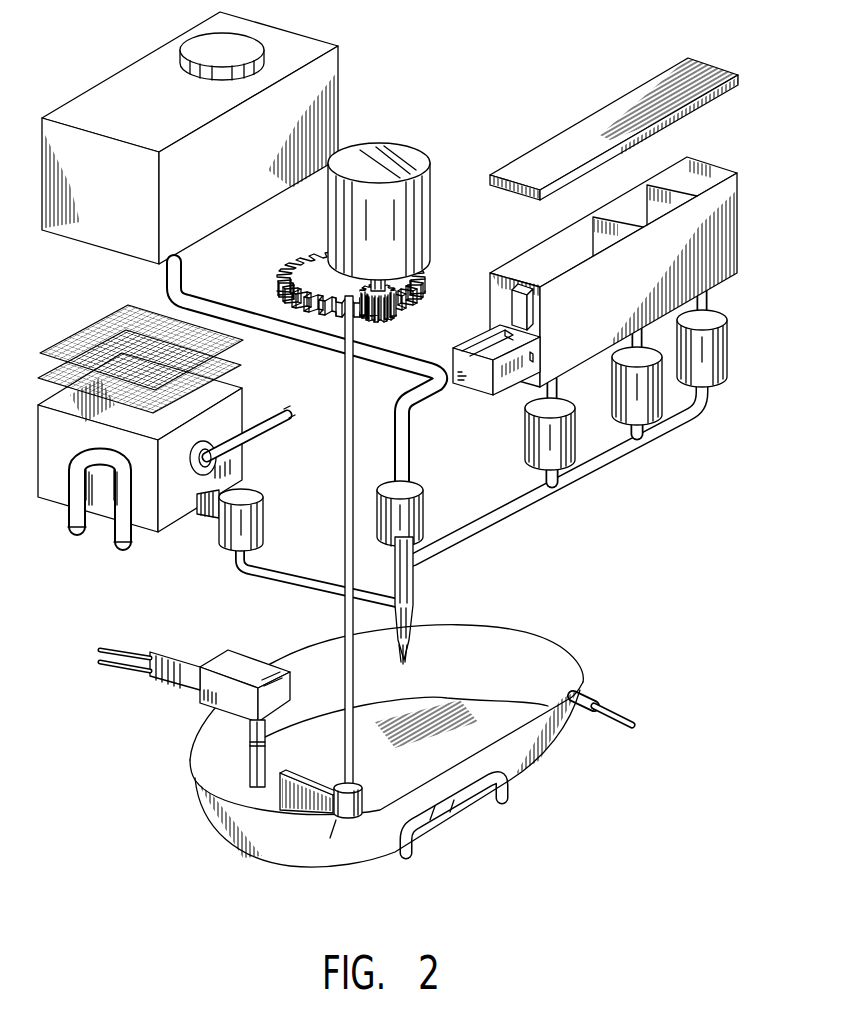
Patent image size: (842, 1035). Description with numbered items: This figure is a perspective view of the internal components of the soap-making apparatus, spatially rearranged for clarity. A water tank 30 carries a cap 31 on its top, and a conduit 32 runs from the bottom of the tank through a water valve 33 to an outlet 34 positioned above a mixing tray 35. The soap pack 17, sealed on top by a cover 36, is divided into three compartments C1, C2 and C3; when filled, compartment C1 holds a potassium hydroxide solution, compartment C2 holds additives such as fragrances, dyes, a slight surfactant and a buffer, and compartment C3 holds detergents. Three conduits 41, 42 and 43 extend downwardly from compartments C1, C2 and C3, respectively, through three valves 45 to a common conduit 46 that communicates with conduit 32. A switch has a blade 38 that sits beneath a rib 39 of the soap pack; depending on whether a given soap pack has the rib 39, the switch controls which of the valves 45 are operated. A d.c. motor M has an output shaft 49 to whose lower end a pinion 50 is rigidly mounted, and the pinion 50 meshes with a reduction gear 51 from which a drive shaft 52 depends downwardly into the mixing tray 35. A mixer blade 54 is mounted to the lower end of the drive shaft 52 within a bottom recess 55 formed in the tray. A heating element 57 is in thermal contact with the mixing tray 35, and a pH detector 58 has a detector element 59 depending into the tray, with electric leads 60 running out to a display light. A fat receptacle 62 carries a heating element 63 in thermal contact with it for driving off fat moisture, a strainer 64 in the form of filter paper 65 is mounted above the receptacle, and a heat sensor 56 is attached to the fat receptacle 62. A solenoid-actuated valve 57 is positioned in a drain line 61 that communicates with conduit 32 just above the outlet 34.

The soap pack 17 is at (622, 261).
The water tank 30 is at (343, 76).
The cap 31 is at (192, 40).
The conduit 32 is at (288, 344).
The water valve 33 is at (428, 499).
The outlet 34 is at (396, 624).
The mixing tray 35 is at (560, 627).
The cover 36 is at (582, 118).
The blade 38 is at (487, 337).
The rib 39 is at (511, 295).
The conduit 41 is at (712, 304).
The conduit 42 is at (645, 337).
The conduit 43 is at (560, 389).
The valves 45 is at (727, 332).
The common conduit 46 is at (620, 476).
The output shaft 49 is at (392, 272).
The pinion 50 is at (386, 316).
The reduction gear 51 is at (293, 262).
The drive shaft 52 is at (344, 482).
The mixer blade 54 is at (300, 809).
The bottom recess 55 is at (341, 764).
The heat sensor 56 is at (262, 441).
The heating element / solenoid-actuated valve 57 is at (218, 537).
The pH detector 58 is at (262, 660).
The detector element 59 is at (249, 772).
The electric leads 60 is at (124, 670).
The drain line 61 is at (304, 586).
The fat receptacle 62 is at (53, 508).
The heating element 63 is at (118, 540).
The strainer 64 is at (71, 341).
The filter paper 65 is at (242, 368).
The d.c. motor M is at (414, 152).
The compartment C1 is at (680, 167).
The compartment C2 is at (622, 197).
The compartment C3 is at (570, 223).